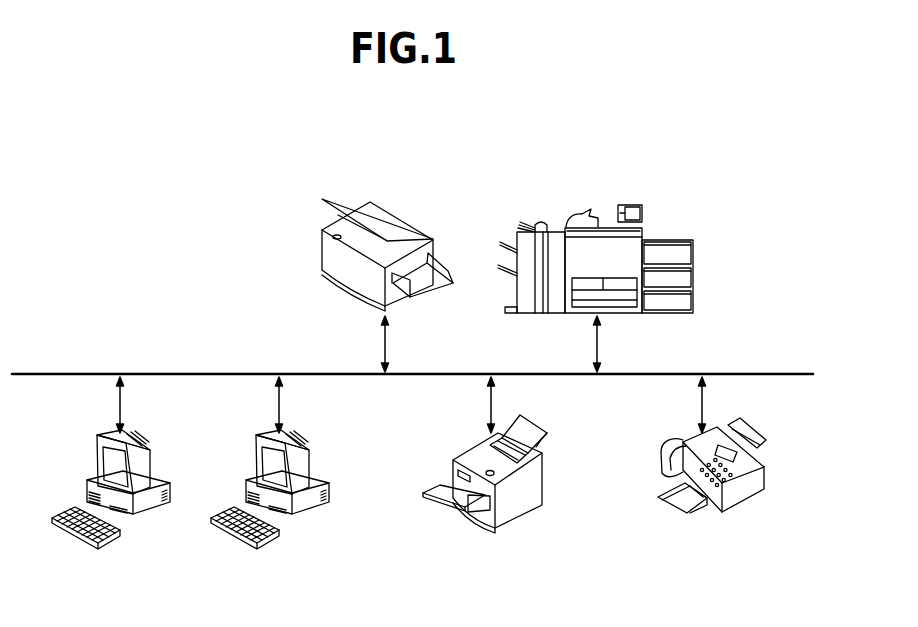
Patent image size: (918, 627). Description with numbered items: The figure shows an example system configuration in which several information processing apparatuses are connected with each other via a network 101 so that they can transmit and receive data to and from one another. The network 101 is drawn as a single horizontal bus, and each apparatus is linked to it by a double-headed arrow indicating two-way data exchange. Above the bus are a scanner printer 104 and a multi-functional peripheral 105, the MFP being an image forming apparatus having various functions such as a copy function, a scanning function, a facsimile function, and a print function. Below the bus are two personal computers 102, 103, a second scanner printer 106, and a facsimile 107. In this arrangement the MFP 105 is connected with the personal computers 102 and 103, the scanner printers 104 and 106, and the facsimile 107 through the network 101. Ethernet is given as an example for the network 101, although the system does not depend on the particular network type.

The network 101 is at (197, 372).
The personal computer 102 is at (85, 546).
The personal computer 103 is at (244, 546).
The scanner printer 104 is at (355, 198).
The multi-functional peripheral 105 is at (631, 205).
The scanner printer 106 is at (485, 529).
The facsimile 107 is at (708, 513).